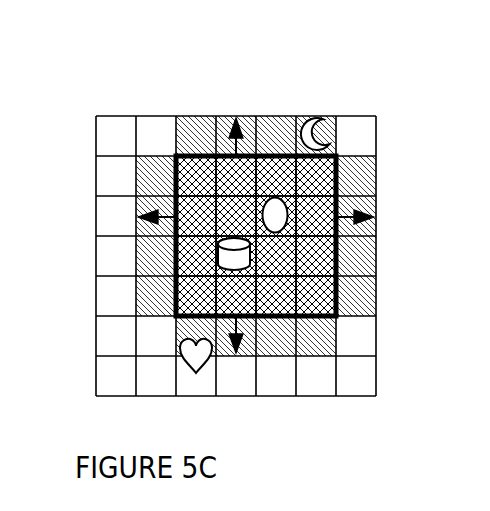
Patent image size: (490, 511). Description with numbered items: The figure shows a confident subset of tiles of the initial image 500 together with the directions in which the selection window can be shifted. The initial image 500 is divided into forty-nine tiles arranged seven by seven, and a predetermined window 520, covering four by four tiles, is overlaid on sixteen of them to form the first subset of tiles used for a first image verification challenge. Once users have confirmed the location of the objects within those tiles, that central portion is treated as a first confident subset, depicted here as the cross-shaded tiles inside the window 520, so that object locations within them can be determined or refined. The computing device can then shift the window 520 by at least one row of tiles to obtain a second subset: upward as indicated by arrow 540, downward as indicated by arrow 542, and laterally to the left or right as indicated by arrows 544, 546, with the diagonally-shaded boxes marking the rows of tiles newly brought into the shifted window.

The initial image 500 is at (203, 116).
The window 520 is at (198, 153).
The arrow 540 is at (243, 114).
The arrow 542 is at (236, 353).
The arrow 544 is at (137, 217).
The arrow 546 is at (352, 218).